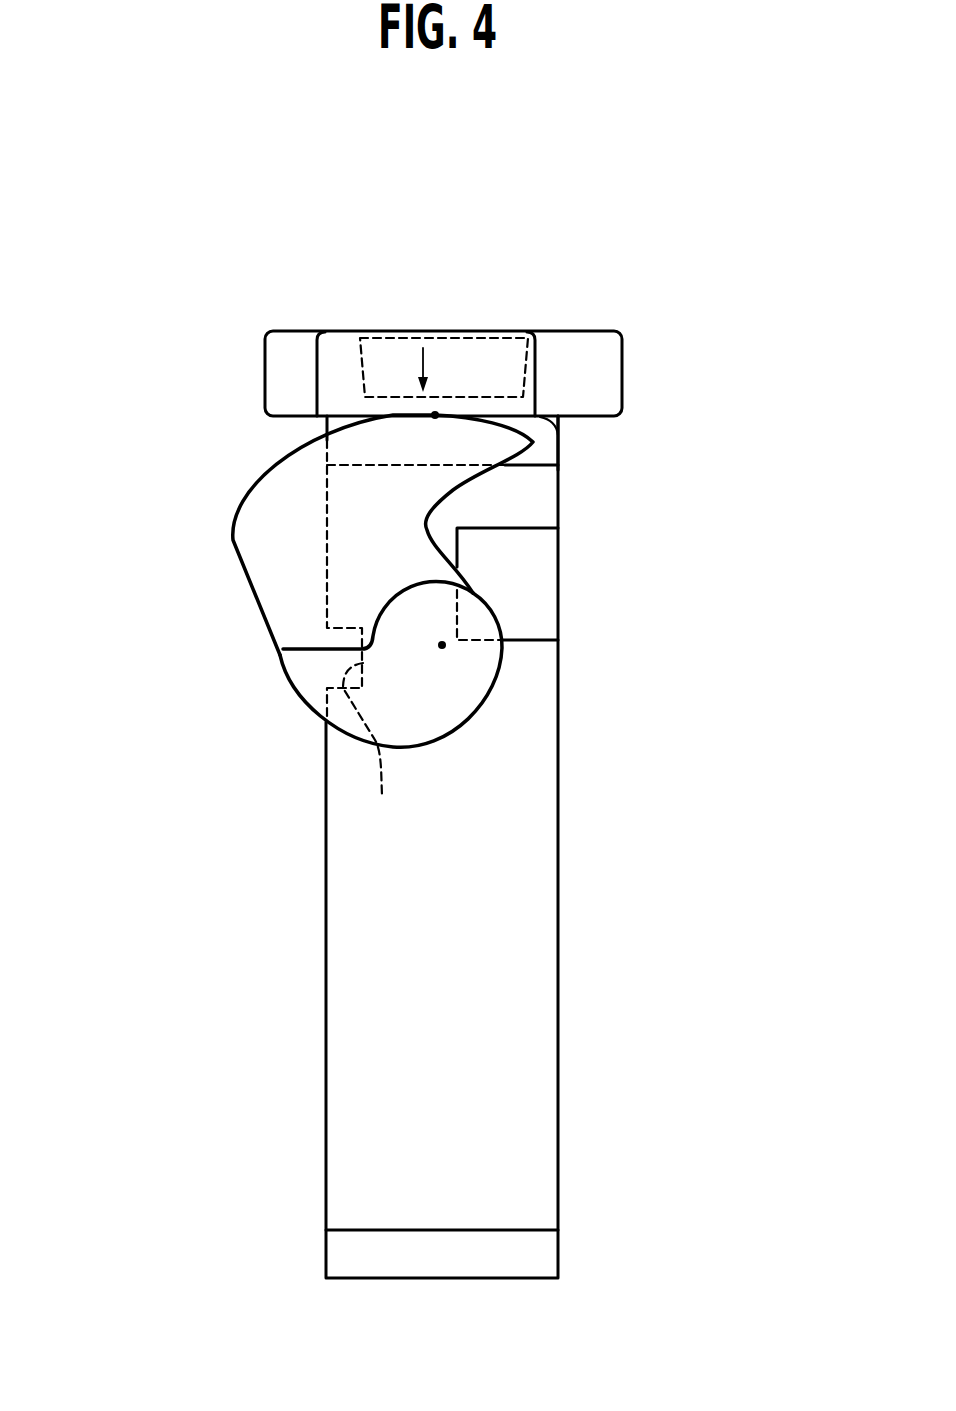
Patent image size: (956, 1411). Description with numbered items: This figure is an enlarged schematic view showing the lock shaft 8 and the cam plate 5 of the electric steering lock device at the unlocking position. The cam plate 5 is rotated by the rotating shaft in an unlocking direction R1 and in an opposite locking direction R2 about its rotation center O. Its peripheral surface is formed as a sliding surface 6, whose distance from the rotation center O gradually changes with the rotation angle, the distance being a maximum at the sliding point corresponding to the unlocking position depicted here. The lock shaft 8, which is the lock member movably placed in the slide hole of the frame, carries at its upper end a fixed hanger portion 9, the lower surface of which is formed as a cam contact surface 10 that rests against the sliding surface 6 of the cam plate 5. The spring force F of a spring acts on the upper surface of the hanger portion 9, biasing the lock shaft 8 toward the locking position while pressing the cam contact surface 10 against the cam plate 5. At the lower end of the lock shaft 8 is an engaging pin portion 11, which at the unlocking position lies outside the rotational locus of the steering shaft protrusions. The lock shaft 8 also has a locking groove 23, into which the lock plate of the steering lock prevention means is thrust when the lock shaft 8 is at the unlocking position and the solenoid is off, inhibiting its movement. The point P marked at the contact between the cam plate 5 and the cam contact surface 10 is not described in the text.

The cam plate 5 is at (308, 725).
The sliding surface 6 is at (272, 472).
The lock shaft 8 is at (537, 1005).
The hanger portion 9 is at (608, 368).
The cam contact surface 10 is at (558, 437).
The engaging pin portion 11 is at (537, 1257).
The locking groove 23 is at (370, 753).
The spring force F is at (423, 368).
The contact point P is at (435, 415).
The rotation center O is at (442, 645).
The unlocking direction R1 is at (262, 690).
The locking direction R2 is at (633, 505).